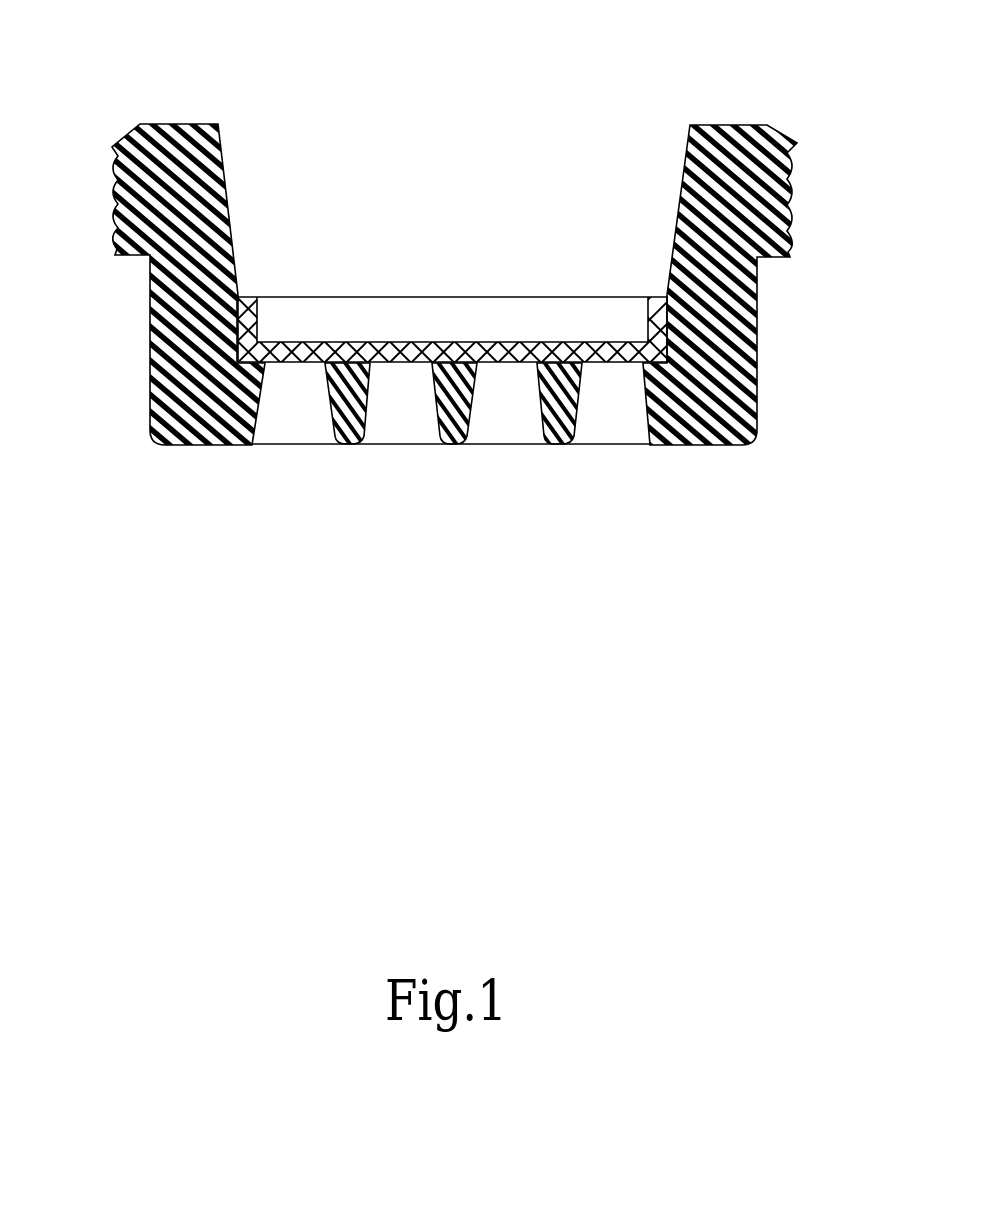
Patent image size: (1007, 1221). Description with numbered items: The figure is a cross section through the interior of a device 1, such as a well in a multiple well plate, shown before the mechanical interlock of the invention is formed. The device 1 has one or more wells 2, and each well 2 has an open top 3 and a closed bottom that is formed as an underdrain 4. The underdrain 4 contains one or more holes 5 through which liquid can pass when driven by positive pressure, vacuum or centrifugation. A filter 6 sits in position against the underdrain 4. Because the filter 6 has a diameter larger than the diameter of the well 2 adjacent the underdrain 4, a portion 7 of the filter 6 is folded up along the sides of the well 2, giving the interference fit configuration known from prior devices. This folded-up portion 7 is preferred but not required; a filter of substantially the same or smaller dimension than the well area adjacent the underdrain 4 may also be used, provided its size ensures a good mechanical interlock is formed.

The device 1 is at (737, 388).
The well 2 is at (515, 192).
The open top 3 is at (384, 223).
The underdrain 4 is at (443, 385).
The holes 5 is at (297, 378).
The filter 6 is at (615, 367).
The portion of the filter 7 is at (670, 333).